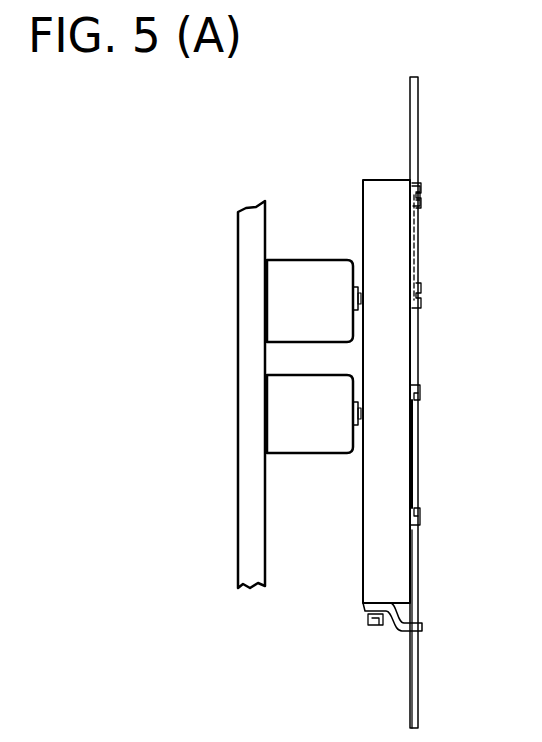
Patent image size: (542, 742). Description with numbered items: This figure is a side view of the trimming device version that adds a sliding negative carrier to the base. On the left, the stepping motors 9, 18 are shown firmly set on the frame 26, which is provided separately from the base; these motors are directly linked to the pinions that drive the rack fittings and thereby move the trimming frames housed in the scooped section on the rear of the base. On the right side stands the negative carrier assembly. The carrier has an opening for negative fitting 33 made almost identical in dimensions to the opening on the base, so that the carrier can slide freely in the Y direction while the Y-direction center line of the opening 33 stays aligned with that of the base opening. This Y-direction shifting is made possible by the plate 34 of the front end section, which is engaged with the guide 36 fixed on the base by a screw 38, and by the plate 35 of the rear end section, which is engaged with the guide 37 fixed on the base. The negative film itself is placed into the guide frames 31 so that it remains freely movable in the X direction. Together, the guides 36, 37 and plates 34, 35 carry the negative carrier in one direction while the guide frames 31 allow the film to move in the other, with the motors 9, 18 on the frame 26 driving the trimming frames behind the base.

The frame 26 is at (268, 224).
The stepping motor 9 is at (314, 258).
The stepping motor 18 is at (300, 455).
The plate of front end section 34 is at (419, 330).
The plate of rear end section 35 is at (418, 545).
The guide 36 is at (420, 244).
The screw 38 is at (421, 196).
The guide frames 31 is at (420, 386).
The opening for negative fitting 33 is at (418, 441).
The guide 37 is at (423, 621).